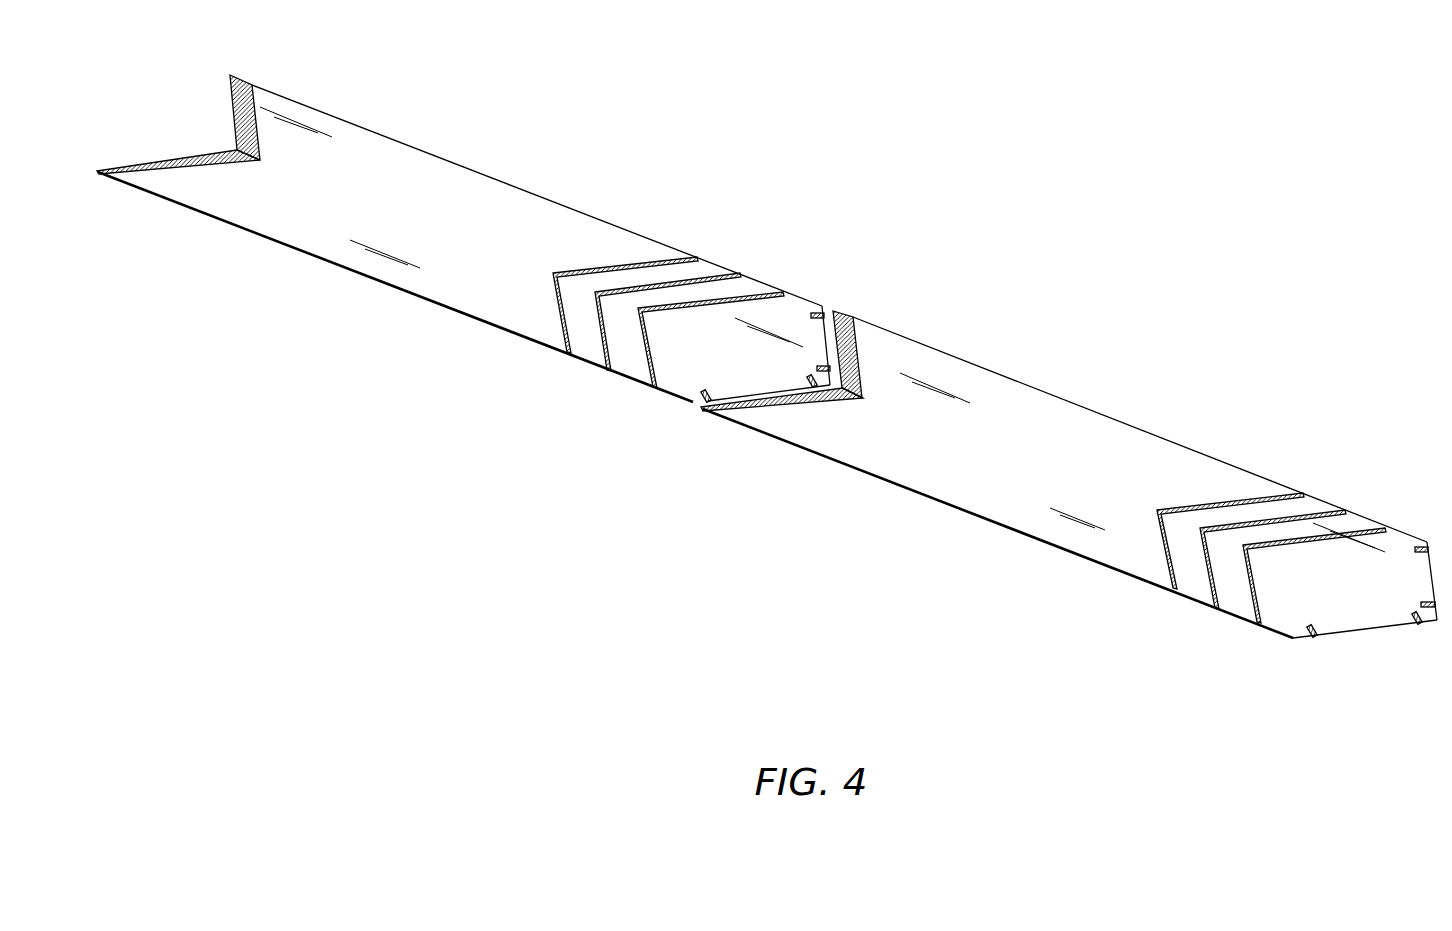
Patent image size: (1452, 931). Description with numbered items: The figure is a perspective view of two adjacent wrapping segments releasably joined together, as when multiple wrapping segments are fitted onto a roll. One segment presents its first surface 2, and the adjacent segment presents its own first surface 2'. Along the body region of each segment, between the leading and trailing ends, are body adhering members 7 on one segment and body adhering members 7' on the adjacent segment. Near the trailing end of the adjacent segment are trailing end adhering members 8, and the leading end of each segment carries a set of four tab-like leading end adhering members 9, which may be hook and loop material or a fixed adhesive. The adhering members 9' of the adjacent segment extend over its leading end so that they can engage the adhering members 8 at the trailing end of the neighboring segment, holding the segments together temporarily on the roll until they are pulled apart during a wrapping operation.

The first surface 2 is at (1070, 477).
The first surface of adjacent wrapping segment 2' is at (463, 238).
The body adhering members 7 is at (1271, 599).
The body adhering members of adjacent wrapping segment 7' is at (668, 369).
The trailing end adhering members 8 is at (868, 323).
The leading end adhering members 9 is at (1371, 594).
The leading end adhering members of adjacent wrapping segment 9' is at (765, 359).